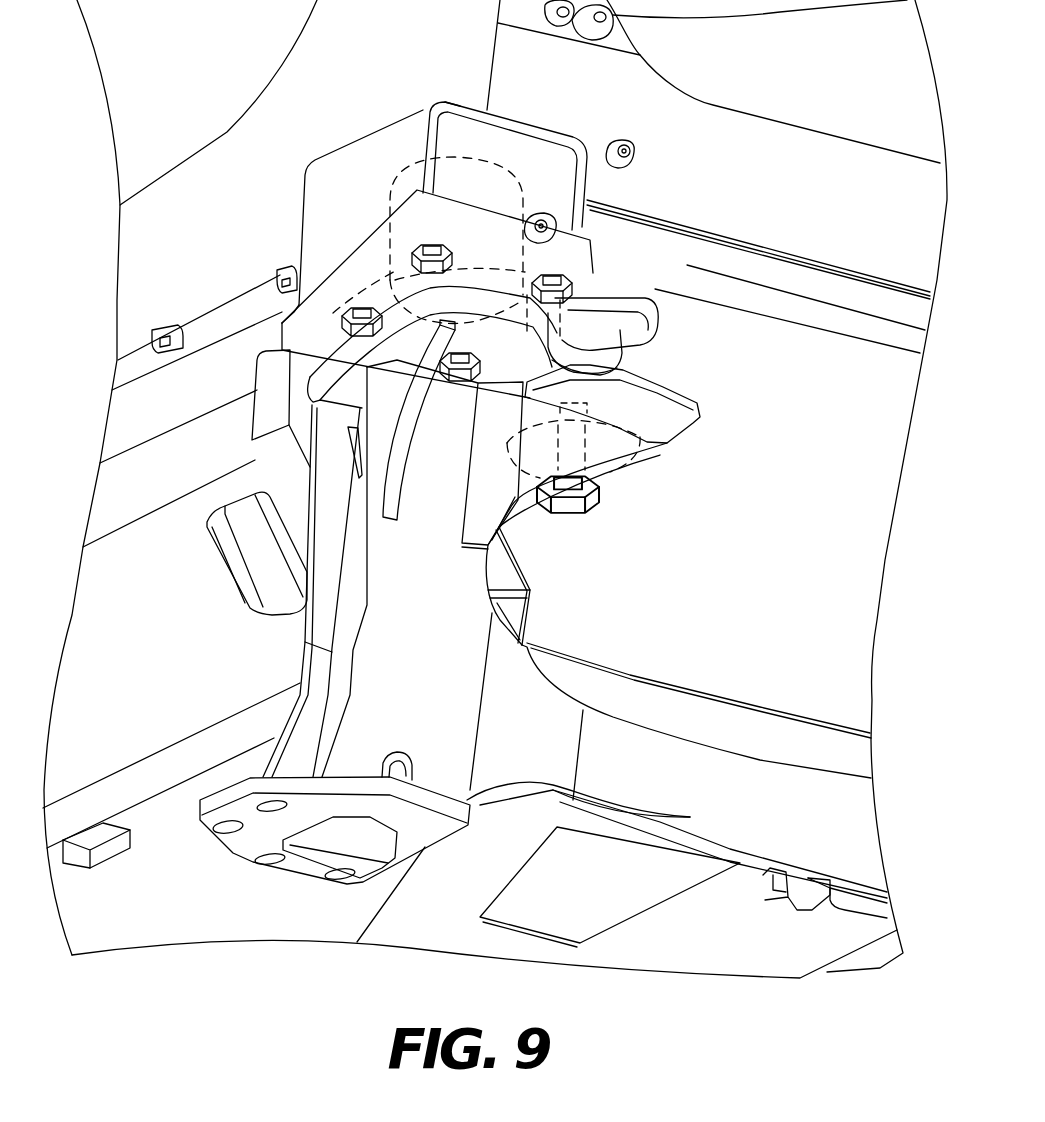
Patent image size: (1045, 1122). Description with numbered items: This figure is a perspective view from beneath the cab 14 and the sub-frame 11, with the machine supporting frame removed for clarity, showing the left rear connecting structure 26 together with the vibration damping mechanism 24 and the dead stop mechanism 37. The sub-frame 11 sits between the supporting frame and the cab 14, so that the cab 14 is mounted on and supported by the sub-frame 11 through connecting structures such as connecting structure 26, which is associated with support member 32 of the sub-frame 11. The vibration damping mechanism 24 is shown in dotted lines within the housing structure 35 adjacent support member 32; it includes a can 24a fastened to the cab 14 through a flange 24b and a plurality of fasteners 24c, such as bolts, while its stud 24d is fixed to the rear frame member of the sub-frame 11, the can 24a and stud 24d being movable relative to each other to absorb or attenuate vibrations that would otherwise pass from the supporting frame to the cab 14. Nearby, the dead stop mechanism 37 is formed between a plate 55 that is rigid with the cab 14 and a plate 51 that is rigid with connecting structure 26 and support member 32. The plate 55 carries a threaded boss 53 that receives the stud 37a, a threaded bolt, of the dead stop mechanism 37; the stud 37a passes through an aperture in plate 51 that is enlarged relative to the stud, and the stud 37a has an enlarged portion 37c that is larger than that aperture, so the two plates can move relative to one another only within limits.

The sub-frame 11 is at (763, 821).
The cab 14 is at (818, 190).
The vibration damping mechanism 24 is at (465, 198).
The can 24a is at (503, 170).
The flange 24b is at (335, 255).
The fasteners 24c is at (545, 268).
The stud 24d is at (588, 300).
The connecting structure 26 is at (228, 690).
The support member 32 is at (408, 643).
The housing structure 35 is at (350, 143).
The dead stop mechanism 37 is at (703, 454).
The stud 37a is at (640, 453).
The enlarged portion 37c is at (605, 472).
The plate 51 is at (698, 412).
The threaded boss 53 is at (623, 362).
The plate 55 is at (657, 330).